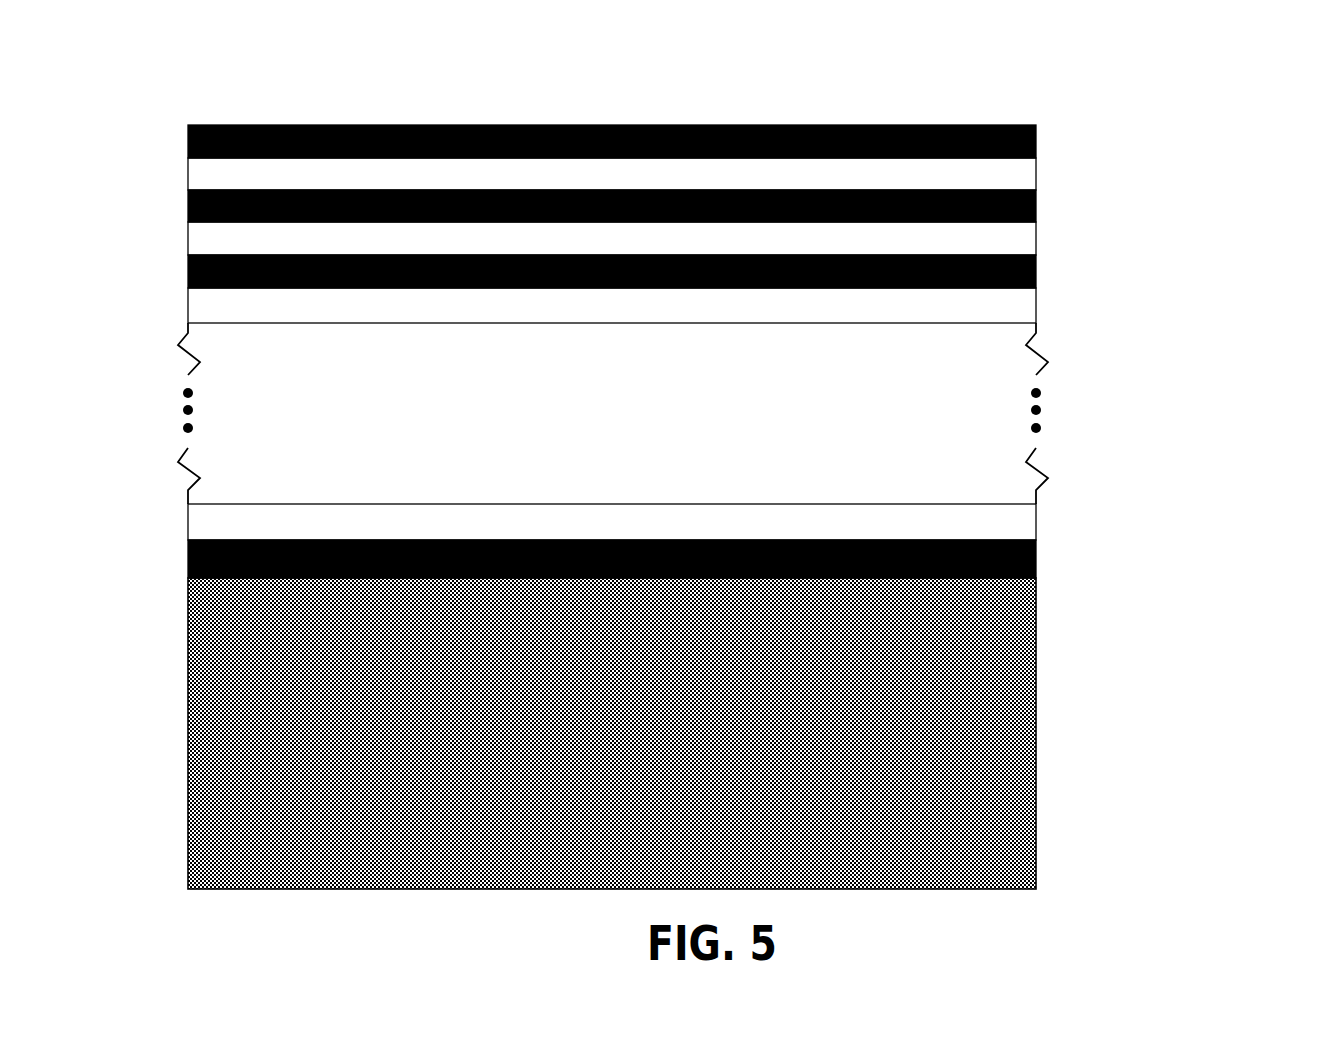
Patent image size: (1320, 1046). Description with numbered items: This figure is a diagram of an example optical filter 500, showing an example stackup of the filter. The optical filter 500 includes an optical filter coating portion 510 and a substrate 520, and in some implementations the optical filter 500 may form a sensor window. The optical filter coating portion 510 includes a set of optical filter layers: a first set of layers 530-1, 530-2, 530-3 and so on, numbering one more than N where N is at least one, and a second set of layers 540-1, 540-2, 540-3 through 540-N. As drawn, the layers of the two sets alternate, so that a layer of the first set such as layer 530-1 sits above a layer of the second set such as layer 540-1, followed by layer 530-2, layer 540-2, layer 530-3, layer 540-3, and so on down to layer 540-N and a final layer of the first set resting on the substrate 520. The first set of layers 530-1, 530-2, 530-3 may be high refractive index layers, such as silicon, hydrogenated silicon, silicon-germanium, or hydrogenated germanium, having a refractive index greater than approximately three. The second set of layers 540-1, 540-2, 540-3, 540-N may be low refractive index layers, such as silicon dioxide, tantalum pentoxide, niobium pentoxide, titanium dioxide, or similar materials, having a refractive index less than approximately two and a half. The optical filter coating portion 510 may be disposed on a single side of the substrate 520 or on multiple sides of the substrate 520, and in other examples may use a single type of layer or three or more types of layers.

The optical filter 500 is at (196, 62).
The optical filter coating portion 510 is at (1200, 108).
The substrate 520 is at (632, 744).
The first layer of the first set of layers 530-1 is at (1128, 157).
The second layer of the first set of layers 530-2 is at (1128, 221).
The third layer of the first set of layers 530-3 is at (1128, 286).
The first layer of the second set of layers 540-1 is at (188, 175).
The second layer of the second set of layers 540-2 is at (188, 239).
The third layer of the second set of layers 540-3 is at (188, 306).
The Nth layer of the second set of layers 540-N is at (188, 520).